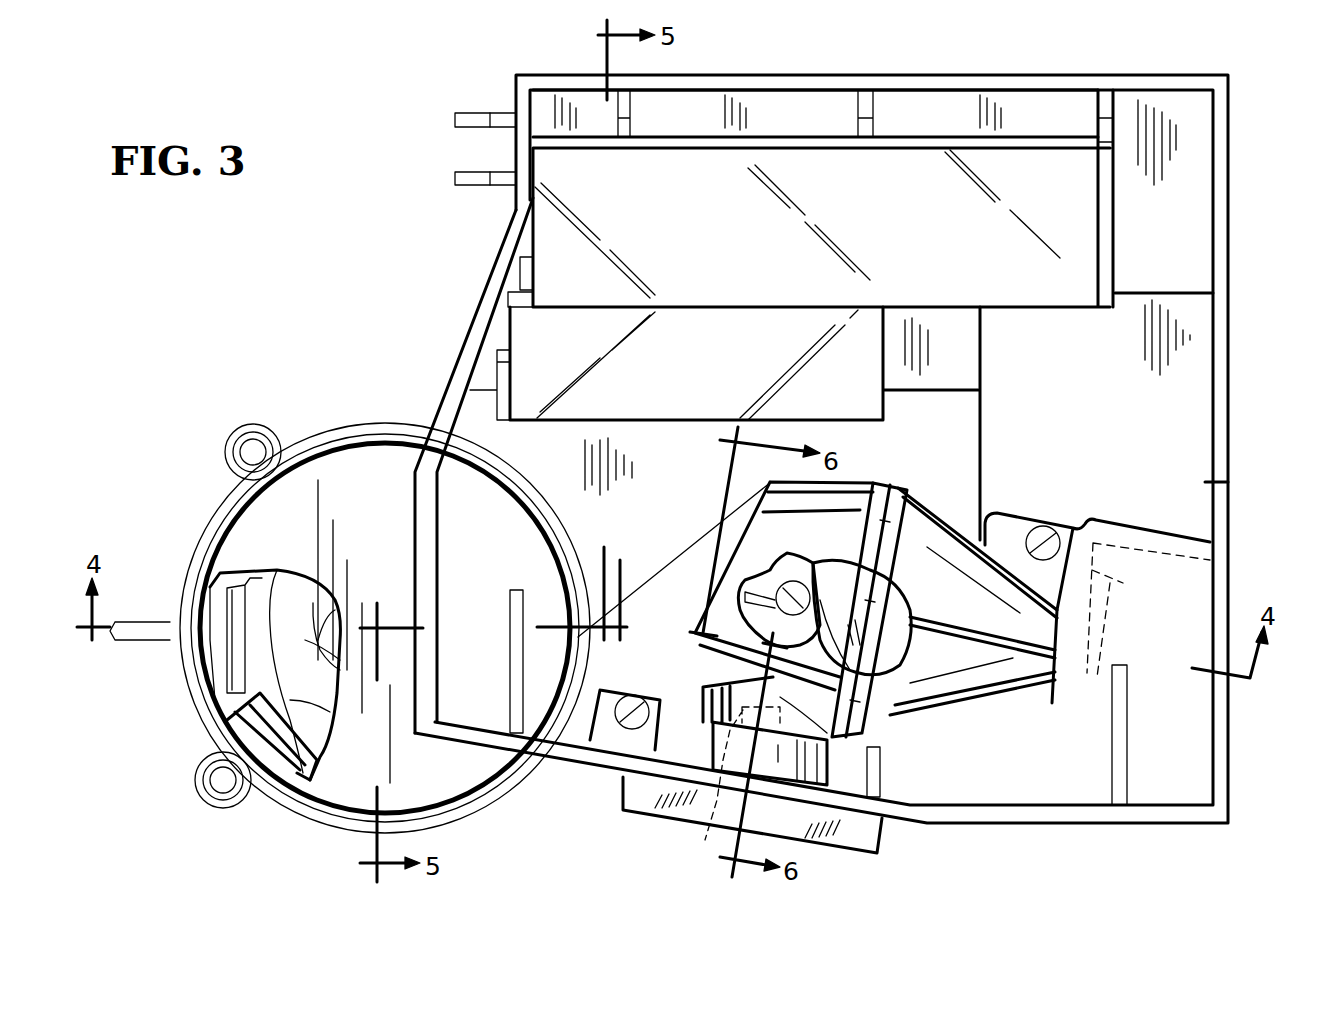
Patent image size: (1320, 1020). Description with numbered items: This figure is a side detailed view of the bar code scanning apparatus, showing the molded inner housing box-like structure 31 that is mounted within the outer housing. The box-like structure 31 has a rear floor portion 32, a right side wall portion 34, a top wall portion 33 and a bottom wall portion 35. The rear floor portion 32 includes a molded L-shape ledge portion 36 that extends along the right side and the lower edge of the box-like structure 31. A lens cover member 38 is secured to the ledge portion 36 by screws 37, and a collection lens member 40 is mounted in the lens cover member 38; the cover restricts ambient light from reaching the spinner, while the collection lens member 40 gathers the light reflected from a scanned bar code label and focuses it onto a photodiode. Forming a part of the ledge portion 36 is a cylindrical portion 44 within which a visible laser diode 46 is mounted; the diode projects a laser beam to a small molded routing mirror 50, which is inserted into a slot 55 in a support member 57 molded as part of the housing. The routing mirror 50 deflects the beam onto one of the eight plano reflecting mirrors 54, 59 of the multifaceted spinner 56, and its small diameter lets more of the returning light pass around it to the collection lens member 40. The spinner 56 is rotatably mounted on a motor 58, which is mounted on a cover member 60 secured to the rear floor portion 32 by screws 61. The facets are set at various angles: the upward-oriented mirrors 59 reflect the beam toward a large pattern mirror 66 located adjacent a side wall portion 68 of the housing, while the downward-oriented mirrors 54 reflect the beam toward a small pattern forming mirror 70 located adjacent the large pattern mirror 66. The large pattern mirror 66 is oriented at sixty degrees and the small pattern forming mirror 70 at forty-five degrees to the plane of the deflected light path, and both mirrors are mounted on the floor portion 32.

The inner housing box-like structure 31 is at (1228, 277).
The rear floor portion 32 is at (1190, 192).
The top wall portion 33 is at (1228, 590).
The right side wall portion 34 is at (1110, 813).
The bottom wall portion 35 is at (468, 337).
The ledge portion 36 is at (1205, 480).
The screws 37 is at (1065, 531).
The lens cover member 38 is at (843, 485).
The collection lens member 40 is at (885, 713).
The cylindrical portion 44 is at (823, 767).
The visible laser diode 46 is at (703, 843).
The routing mirror 50 is at (787, 553).
The plano reflecting mirrors 54 is at (225, 655).
The slot 55 is at (785, 612).
The multifaceted spinner 56 is at (240, 700).
The support member 57 is at (808, 563).
The motor 58 is at (292, 760).
The plano reflecting mirrors 59 is at (217, 735).
The cover member 60 is at (340, 432).
The screws 61 is at (262, 425).
The large pattern mirror 66 is at (747, 180).
The side wall portion 68 is at (940, 80).
The small pattern forming mirror 70 is at (657, 390).